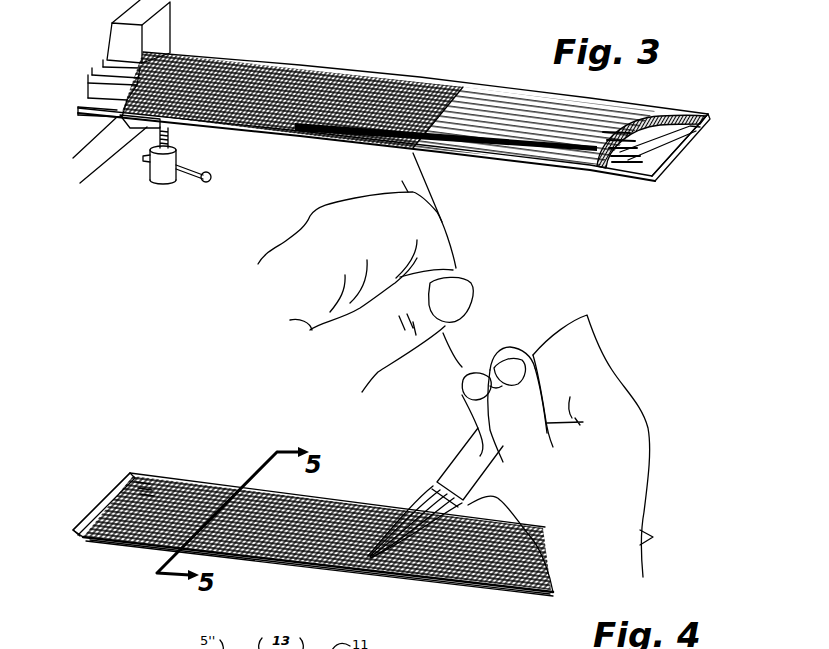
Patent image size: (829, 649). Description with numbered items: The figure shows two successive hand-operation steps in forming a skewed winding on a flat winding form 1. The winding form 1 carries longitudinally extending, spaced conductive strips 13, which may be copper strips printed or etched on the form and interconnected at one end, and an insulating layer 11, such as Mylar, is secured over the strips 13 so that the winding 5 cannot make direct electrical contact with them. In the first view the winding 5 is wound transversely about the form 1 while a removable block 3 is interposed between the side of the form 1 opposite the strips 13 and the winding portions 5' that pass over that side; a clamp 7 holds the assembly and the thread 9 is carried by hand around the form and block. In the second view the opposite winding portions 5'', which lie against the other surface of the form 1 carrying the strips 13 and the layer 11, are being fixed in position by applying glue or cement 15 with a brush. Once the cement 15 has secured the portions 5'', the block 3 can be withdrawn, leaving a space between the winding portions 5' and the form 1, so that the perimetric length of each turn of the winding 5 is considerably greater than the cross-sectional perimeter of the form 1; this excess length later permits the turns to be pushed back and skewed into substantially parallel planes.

In FIG. 3, the winding form 1 is at (540, 157).
In FIG. 4, the winding form 1 is at (80, 530).
In FIG. 3, the removable block 3 is at (608, 106).
In FIG. 4, the removable block 3 is at (102, 538).
In FIG. 3, the winding 5 is at (292, 110).
In FIG. 4, the winding 5 is at (320, 572).
In FIG. 3, the winding portions 5' is at (359, 86).
In FIG. 4, the opposite winding portions 5'' is at (317, 517).
In FIG. 3, the clamp 7 is at (117, 118).
In FIG. 3, the weft thread 9 is at (423, 203).
In FIG. 3, the insulating layer 11 is at (665, 172).
In FIG. 4, the insulating layer 11 is at (88, 518).
In FIG. 3, the conductive strips 13 is at (610, 167).
In FIG. 4, the conductive strips 13 is at (141, 480).
In FIG. 4, the glue or cement 15 is at (390, 503).